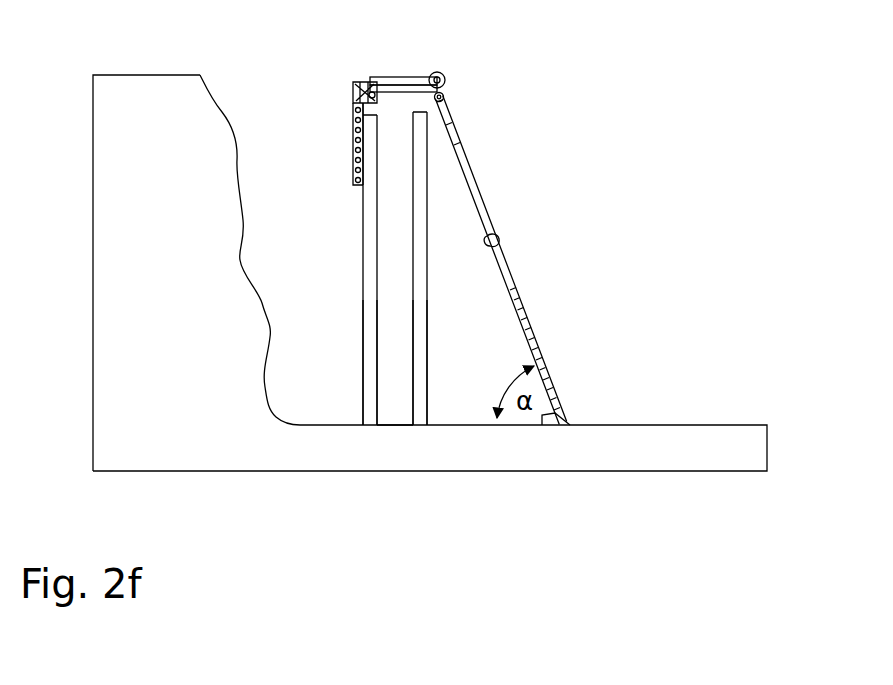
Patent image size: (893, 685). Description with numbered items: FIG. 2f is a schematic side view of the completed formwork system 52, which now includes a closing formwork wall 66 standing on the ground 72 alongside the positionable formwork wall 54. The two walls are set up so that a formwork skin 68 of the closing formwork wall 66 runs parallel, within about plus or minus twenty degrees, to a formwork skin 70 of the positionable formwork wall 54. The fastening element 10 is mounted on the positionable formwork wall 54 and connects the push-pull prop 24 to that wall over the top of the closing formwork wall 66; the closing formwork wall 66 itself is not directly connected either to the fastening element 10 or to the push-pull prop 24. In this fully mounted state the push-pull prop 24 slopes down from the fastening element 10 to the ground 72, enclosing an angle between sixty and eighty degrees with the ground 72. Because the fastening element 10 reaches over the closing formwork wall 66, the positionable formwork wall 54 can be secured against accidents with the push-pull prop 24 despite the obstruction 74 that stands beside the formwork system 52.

The fastening element 10 is at (347, 72).
The push-pull prop 24 is at (473, 193).
The formwork system 52 is at (682, 96).
The positionable formwork wall 54 is at (350, 380).
The closing formwork wall 66 is at (434, 407).
The formwork skin 68 is at (412, 398).
The formwork skin 70 is at (378, 402).
The ground 72 is at (700, 425).
The obstruction 74 is at (207, 93).